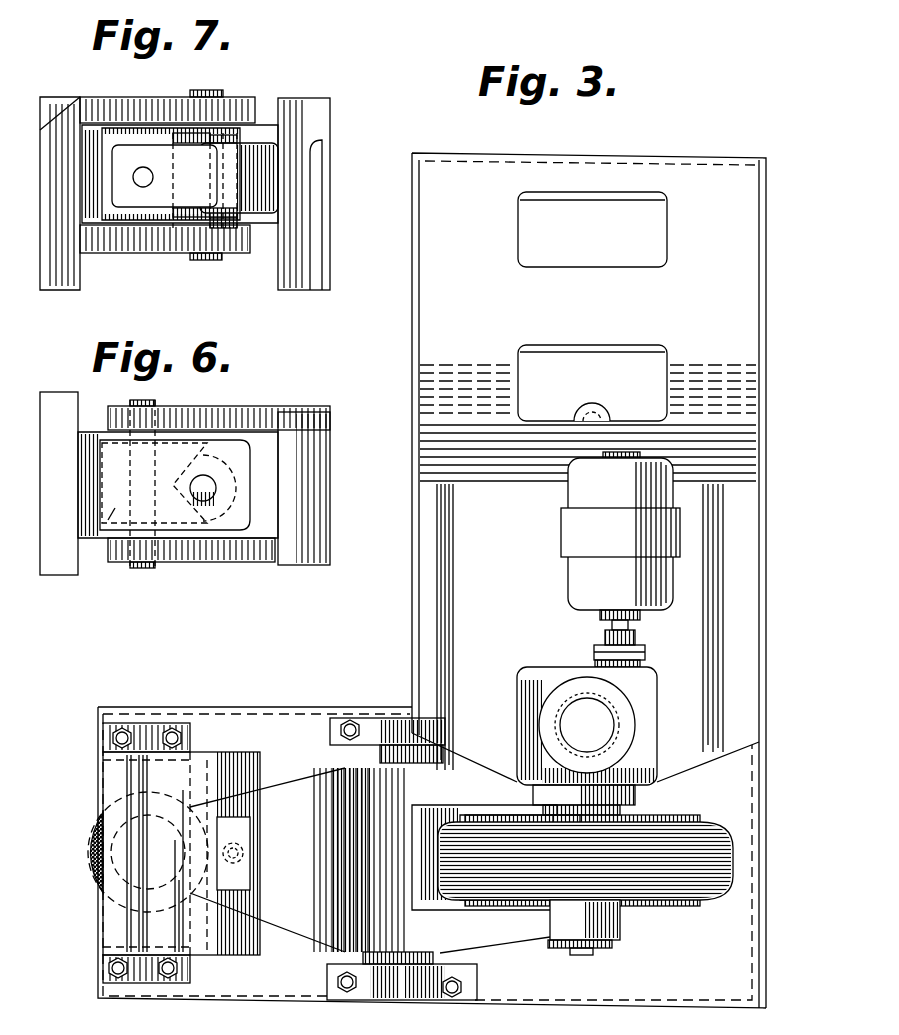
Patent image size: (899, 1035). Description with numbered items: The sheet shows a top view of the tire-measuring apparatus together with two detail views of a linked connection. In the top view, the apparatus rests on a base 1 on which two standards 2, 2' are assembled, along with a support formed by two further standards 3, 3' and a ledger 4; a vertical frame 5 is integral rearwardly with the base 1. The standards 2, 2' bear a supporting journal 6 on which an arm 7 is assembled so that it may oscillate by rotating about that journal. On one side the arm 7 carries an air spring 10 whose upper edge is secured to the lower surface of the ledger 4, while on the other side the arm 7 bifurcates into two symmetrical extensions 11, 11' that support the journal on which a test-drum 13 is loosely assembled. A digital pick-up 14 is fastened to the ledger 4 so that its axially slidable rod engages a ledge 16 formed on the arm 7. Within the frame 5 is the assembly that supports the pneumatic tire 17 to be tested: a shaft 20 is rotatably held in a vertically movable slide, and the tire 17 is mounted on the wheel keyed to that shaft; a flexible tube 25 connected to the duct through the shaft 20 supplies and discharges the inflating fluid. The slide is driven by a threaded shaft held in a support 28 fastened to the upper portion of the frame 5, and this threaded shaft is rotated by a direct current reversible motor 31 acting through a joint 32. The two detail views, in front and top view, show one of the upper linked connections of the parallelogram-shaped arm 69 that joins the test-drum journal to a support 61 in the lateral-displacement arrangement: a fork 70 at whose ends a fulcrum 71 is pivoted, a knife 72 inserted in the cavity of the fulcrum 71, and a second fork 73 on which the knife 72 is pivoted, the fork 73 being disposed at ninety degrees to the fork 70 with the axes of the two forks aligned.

In FIG. 3, the base 1 is at (724, 982).
In FIG. 3, the standard 2 is at (394, 999).
In FIG. 3, the standard 2' is at (373, 720).
In FIG. 3, the standard 3 is at (116, 964).
In FIG. 3, the standard 3' is at (117, 743).
In FIG. 3, the ledger 4 is at (122, 815).
In FIG. 3, the vertical frame 5 is at (737, 253).
In FIG. 3, the supporting journal 6 is at (393, 962).
In FIG. 3, the arm 7 is at (312, 913).
In FIG. 3, the air spring 10 is at (88, 870).
In FIG. 3, the extension 11 is at (495, 955).
In FIG. 3, the extension 11' is at (492, 812).
In FIG. 3, the test-drum 13 is at (677, 820).
In FIG. 3, the digital pick-up 14 is at (228, 942).
In FIG. 3, the ledge 16 is at (250, 872).
In FIG. 3, the pneumatic tire 17 is at (682, 868).
In FIG. 3, the shaft 20 is at (603, 922).
In FIG. 3, the flexible tube 25 is at (593, 408).
In FIG. 3, the support 28 is at (600, 718).
In FIG. 3, the direct current reversible motor 31 is at (580, 533).
In FIG. 3, the joint 32 is at (597, 643).
In FIG. 7, the support 61 is at (60, 247).
In FIG. 6, the support 61 is at (60, 537).
In FIG. 7, the parallelogram shaped arm 69 is at (292, 106).
In FIG. 6, the parallelogram shaped arm 69 is at (302, 547).
In FIG. 7, the fork 70 is at (250, 170).
In FIG. 6, the fork 70 is at (243, 420).
In FIG. 7, the fulcrum 71 is at (152, 210).
In FIG. 6, the fulcrum 71 is at (112, 508).
In FIG. 7, the knife 72 is at (217, 207).
In FIG. 6, the knife 72 is at (222, 533).
In FIG. 7, the fork 73 is at (100, 108).
In FIG. 6, the fork 73 is at (92, 463).